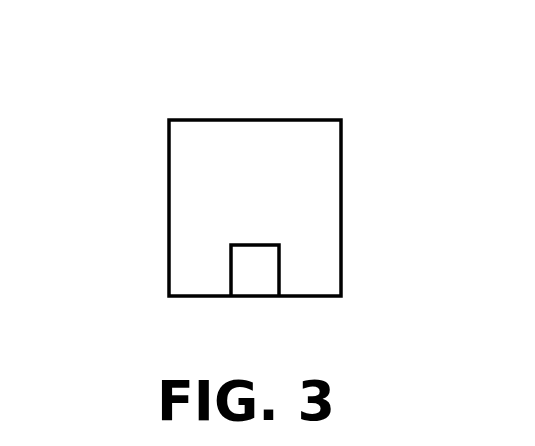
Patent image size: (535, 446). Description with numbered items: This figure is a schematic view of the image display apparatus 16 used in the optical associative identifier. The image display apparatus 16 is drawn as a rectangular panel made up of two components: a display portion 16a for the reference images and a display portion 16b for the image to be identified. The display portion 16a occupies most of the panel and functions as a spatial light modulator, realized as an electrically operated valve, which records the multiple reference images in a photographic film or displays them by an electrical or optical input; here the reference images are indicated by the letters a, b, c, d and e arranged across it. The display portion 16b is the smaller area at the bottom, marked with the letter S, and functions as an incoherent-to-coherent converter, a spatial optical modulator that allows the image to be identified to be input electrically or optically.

The image display apparatus 16 is at (164, 130).
The display portion for the reference image 16a is at (250, 145).
The display portion for the image to be identified 16b is at (254, 283).